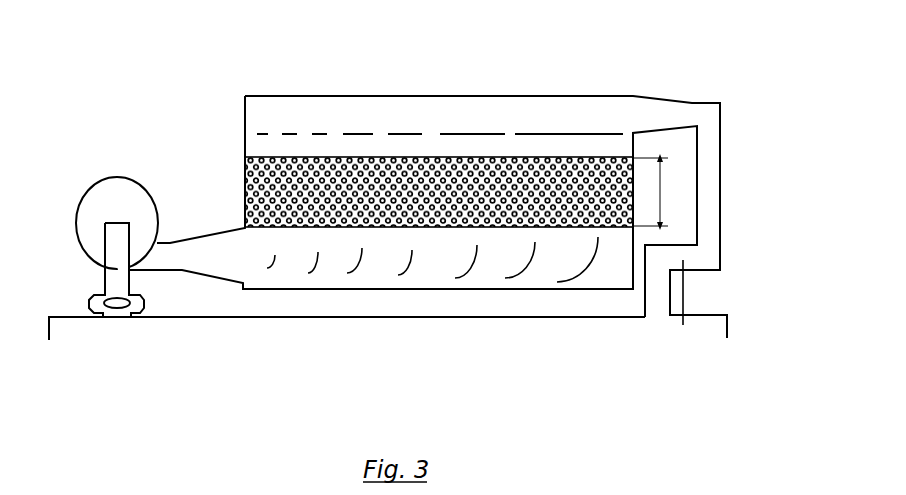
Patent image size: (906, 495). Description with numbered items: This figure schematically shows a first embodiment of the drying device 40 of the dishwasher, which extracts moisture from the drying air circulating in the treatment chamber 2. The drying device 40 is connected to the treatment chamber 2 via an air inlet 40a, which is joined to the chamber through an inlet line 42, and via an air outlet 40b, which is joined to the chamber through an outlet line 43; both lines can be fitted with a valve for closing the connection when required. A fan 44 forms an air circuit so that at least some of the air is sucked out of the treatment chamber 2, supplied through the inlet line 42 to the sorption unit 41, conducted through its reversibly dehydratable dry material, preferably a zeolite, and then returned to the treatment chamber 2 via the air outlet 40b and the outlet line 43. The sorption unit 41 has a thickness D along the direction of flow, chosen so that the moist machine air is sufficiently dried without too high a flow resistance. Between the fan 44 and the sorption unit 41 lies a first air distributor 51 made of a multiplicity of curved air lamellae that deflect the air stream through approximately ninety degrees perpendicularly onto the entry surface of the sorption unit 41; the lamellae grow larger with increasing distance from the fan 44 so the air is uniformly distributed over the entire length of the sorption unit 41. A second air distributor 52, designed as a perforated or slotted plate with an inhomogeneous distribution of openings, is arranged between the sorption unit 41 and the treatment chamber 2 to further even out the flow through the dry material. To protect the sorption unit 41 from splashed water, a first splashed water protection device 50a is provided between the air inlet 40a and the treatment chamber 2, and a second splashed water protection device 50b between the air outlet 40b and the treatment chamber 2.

The drying device 40 is at (132, 31).
The air inlet 40a is at (117, 278).
The air outlet 40b is at (702, 180).
The sorption unit 41 is at (255, 190).
The inlet line 42 is at (72, 270).
The outlet line 43 is at (485, 217).
The fan 44 is at (117, 205).
The first splashed water protection device 50a is at (117, 307).
The second splashed water protection device 50b is at (683, 325).
The first air distributor 51 is at (318, 255).
The second air distributor 52 is at (357, 133).
The treatment chamber 2 is at (398, 375).